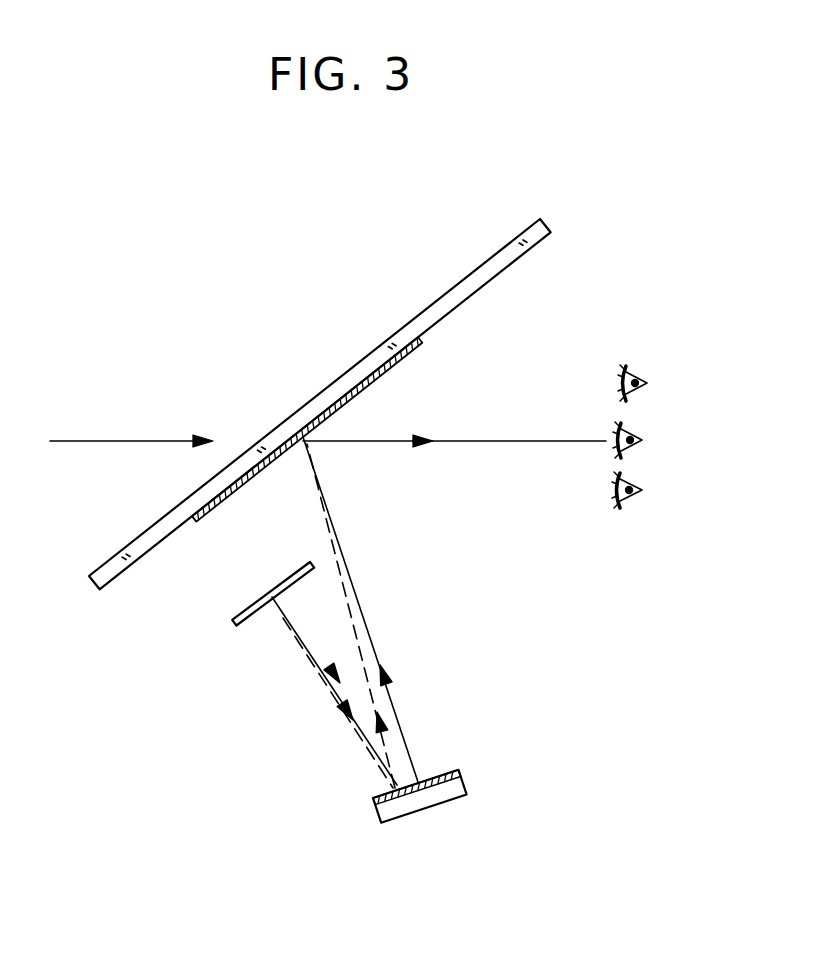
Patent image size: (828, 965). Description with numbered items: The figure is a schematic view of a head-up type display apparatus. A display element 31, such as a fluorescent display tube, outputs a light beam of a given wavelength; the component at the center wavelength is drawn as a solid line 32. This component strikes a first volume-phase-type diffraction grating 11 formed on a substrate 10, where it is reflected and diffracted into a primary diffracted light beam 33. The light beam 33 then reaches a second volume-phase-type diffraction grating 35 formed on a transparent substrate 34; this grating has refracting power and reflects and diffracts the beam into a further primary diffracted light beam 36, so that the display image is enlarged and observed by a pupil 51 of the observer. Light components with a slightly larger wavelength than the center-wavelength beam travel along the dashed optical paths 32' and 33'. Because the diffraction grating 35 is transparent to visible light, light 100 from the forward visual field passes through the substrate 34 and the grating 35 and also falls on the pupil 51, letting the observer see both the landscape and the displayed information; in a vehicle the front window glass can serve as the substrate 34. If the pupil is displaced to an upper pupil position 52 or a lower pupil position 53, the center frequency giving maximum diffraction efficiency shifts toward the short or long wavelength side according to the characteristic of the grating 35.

The light from a forward visual field 100 is at (127, 432).
The transparent substrate 34 is at (497, 263).
The second volume-phase-type diffraction grating 35 is at (420, 345).
The light beam (primary diffracted light) 36 is at (432, 438).
The display element 31 is at (233, 623).
The solid line light component 32 is at (331, 691).
The optical path 32' is at (330, 703).
The light beam (primary diffracted light) 33 is at (383, 609).
The optical path 33' is at (394, 616).
The substrate 10 is at (455, 803).
The first volume-phase-type diffraction grating 11 is at (443, 767).
The pupil 51 is at (642, 432).
The upper pupil position 52 is at (647, 375).
The lower pupil position 53 is at (642, 482).